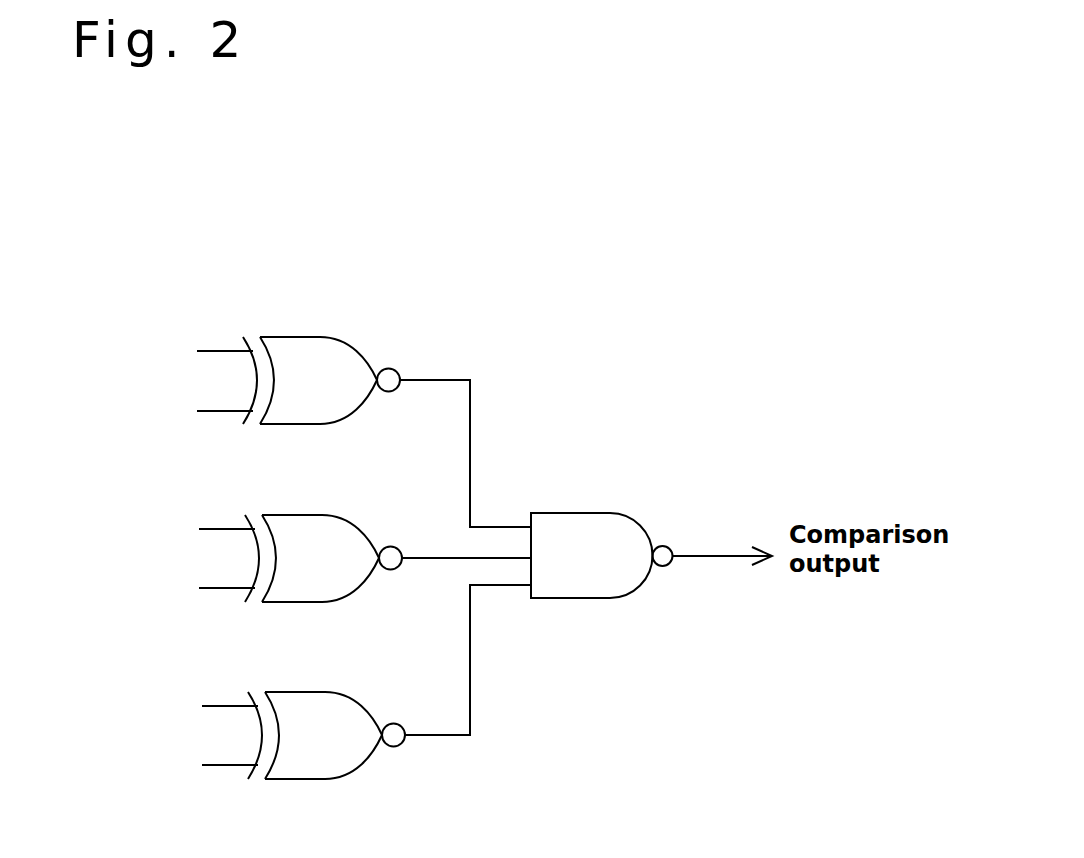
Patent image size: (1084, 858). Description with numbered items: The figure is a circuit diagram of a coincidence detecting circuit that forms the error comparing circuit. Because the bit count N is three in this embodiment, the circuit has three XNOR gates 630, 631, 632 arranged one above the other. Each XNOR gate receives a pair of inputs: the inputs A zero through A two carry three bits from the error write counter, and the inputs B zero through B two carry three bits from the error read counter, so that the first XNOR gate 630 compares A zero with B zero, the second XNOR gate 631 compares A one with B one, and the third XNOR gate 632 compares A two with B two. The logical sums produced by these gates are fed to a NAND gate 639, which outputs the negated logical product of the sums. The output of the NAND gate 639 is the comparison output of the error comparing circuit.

The XNOR gate 630 is at (317, 350).
The XNOR gate 631 is at (318, 528).
The XNOR gate 632 is at (322, 707).
The NAND gate 639 is at (590, 527).